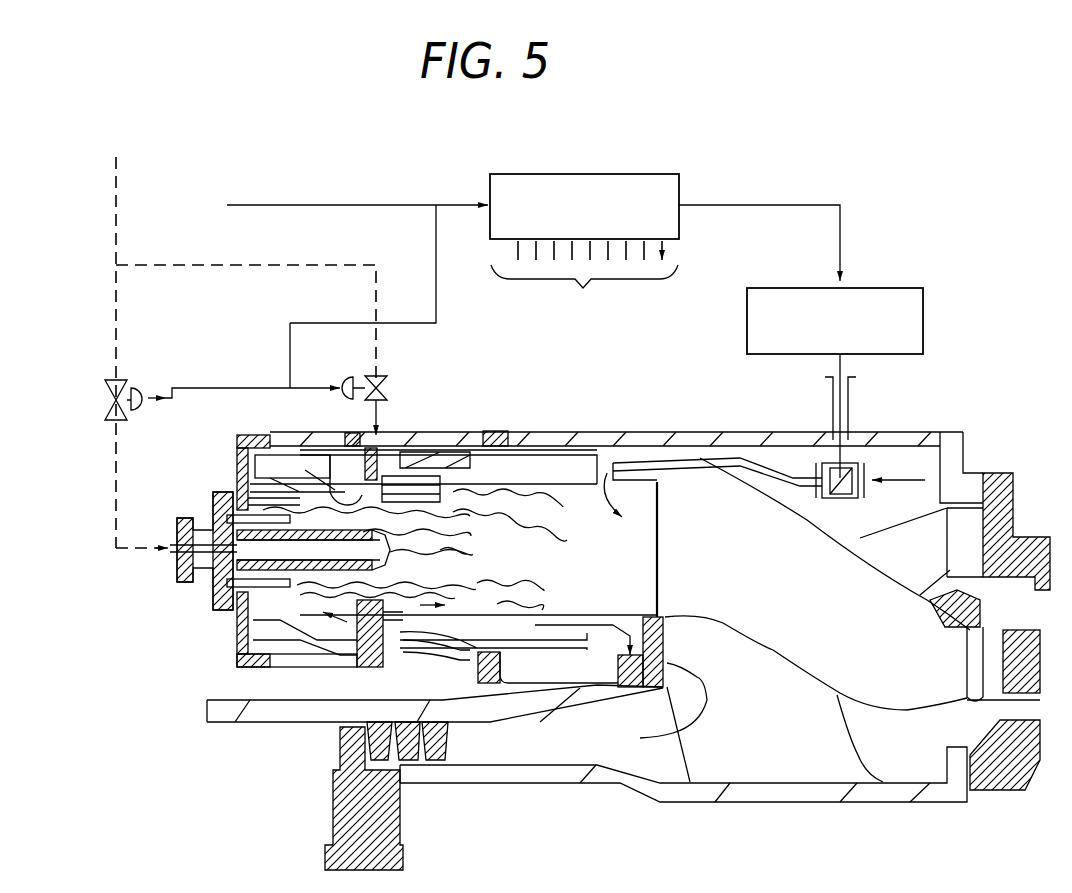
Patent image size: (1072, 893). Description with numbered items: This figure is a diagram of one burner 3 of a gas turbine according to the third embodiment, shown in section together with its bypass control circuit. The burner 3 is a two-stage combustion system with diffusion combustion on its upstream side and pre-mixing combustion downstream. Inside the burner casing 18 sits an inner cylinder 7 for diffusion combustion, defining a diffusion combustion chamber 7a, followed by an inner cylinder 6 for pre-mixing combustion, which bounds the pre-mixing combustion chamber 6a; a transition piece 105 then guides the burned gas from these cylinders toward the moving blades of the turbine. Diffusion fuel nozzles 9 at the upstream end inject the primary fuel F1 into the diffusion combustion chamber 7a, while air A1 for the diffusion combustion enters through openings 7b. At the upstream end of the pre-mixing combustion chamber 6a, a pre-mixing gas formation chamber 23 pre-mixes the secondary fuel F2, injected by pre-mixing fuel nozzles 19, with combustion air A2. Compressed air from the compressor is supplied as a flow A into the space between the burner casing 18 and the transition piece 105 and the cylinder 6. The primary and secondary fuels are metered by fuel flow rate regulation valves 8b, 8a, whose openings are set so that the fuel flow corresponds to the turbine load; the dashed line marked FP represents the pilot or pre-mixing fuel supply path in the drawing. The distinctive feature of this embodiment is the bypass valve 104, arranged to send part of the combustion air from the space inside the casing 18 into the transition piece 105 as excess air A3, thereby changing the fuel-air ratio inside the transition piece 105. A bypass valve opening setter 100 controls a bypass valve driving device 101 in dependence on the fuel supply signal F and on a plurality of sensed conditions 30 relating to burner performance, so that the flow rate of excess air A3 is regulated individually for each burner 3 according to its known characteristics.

The burner 3 is at (951, 432).
The inner cylinder for pre-mixing combustion 6 is at (560, 476).
The pre-mixing combustion chamber 6a is at (540, 573).
The inner cylinder for diffusion combustion 7 is at (306, 486).
The diffusion combustion chamber 7a is at (321, 551).
The openings 7b is at (347, 485).
The fuel flow rate regulation valve 8a is at (383, 380).
The fuel flow rate regulation valve 8b is at (110, 386).
The diffusion fuel nozzles 9 is at (248, 487).
The burner casing 18 is at (684, 433).
The pre-mixing fuel nozzles 19 is at (407, 447).
The pre-mixing gas formation chamber 23 is at (447, 443).
The sensed conditions 30 is at (584, 279).
The bypass valve opening setter 100 is at (683, 193).
The bypass valve driving device 101 is at (916, 290).
The bypass valve 104 is at (828, 442).
The transition piece 105 is at (775, 658).
The fuel supply signal F is at (257, 205).
The primary fuel F1 is at (116, 440).
The secondary fuel F2 is at (381, 418).
The pilot fuel signal line FP is at (116, 290).
The air flow A is at (630, 742).
The air for diffusion combustion A1 is at (323, 619).
The combustion air for pre-mixing A2 is at (449, 605).
The excess air A3 is at (626, 495).